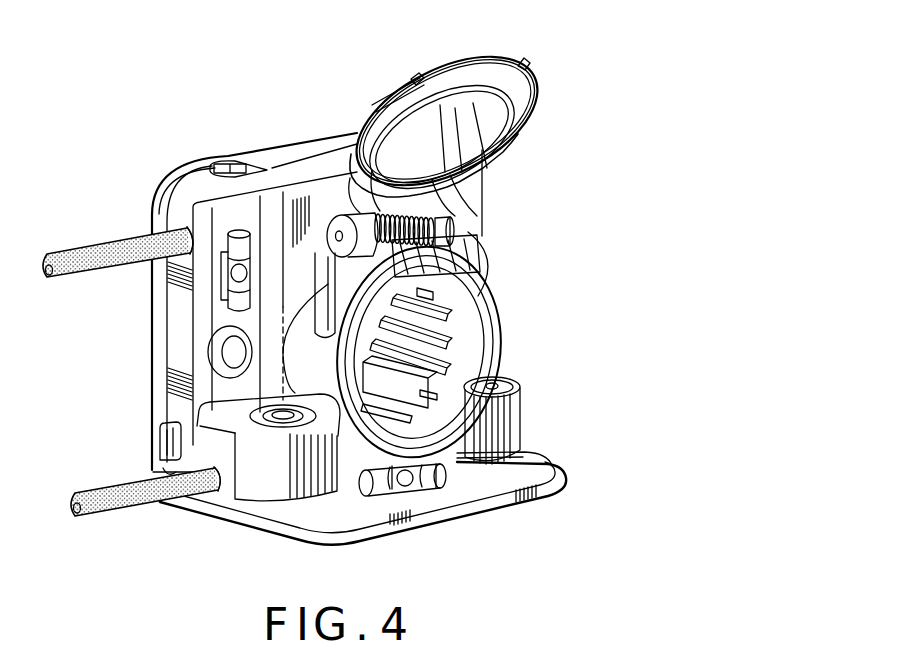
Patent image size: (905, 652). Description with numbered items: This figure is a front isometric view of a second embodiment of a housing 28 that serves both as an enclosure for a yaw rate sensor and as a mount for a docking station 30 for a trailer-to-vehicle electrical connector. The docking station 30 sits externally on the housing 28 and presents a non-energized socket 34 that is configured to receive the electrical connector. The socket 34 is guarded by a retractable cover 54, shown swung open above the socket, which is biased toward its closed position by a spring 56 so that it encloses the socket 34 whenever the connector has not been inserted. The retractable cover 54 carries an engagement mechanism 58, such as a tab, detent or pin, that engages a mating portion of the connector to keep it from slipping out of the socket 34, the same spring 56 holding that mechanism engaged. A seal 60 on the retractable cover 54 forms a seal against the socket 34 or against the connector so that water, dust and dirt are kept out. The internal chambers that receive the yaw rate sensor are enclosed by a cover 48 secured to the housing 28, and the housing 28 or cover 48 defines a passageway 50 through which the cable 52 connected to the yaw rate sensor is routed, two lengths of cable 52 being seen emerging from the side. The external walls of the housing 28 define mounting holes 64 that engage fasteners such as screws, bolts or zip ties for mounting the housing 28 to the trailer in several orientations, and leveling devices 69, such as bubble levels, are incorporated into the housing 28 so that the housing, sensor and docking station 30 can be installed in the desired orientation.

The housing 28 is at (267, 78).
The docking station 30 is at (500, 304).
The non-energized socket 34 is at (440, 355).
The cover 48 is at (172, 180).
The passageway 50 is at (140, 216).
The cable 52 is at (118, 238).
The retractable cover 54 is at (437, 52).
The spring 56 is at (430, 214).
The engagement mechanism 58 is at (484, 162).
The seal 60 is at (530, 92).
The mounting holes 64 is at (233, 353).
The leveling device 69 is at (233, 261).